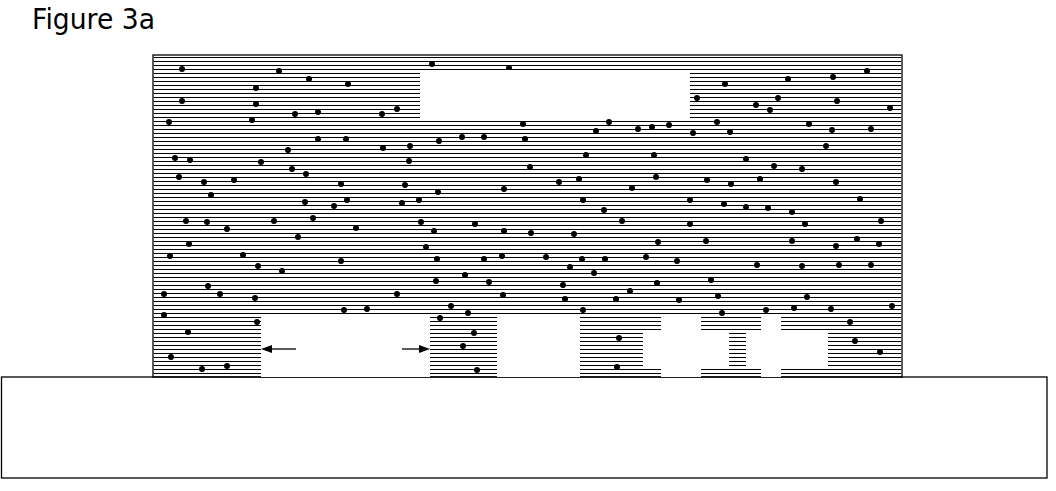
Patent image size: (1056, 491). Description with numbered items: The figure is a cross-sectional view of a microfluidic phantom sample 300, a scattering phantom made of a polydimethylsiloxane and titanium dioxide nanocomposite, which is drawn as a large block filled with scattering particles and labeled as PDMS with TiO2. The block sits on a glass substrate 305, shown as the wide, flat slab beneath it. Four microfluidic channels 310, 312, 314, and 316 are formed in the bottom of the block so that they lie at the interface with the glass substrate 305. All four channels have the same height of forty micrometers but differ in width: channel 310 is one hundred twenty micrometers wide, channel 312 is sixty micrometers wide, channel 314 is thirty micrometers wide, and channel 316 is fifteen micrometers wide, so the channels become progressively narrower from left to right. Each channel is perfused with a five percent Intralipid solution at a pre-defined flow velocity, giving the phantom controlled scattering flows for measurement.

The microfluidic phantom sample 300 is at (134, 220).
The glass substrate 305 is at (81, 444).
The microfluidic channel 310 is at (283, 347).
The microfluidic channel 312 is at (522, 363).
The microfluidic channel 314 is at (688, 365).
The microfluidic channel 316 is at (772, 365).